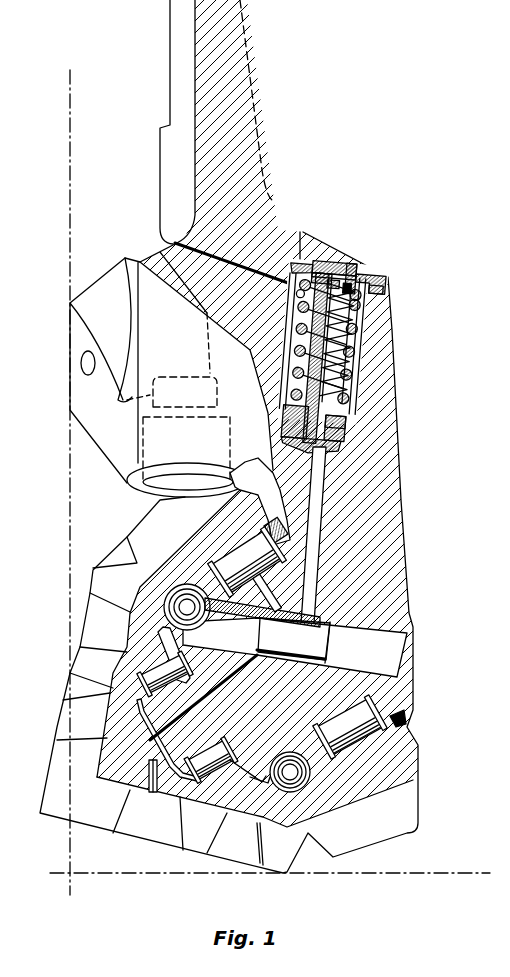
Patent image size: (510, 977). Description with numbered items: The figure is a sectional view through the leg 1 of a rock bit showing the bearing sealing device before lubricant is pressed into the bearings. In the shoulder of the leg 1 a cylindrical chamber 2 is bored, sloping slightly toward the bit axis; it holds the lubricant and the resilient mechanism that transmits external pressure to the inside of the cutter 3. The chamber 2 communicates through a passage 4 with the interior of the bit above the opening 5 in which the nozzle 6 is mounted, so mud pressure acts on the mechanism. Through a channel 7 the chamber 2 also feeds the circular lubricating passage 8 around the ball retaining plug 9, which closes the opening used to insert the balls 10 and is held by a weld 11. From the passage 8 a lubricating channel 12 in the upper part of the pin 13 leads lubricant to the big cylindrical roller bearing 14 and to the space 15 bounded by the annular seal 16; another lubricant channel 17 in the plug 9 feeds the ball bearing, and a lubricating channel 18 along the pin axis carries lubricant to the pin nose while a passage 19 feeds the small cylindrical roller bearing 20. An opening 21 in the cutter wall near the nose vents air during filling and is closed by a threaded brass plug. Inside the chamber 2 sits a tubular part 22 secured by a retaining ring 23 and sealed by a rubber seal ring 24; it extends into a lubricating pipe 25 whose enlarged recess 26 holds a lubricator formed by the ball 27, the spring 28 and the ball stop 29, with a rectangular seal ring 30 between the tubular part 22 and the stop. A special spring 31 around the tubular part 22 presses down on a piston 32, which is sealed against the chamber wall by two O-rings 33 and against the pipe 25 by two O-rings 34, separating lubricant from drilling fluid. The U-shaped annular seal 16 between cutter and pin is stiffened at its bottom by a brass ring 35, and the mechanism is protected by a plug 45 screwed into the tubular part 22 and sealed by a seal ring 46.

The leg 1 is at (233, 77).
The cylindrical chamber 2 is at (362, 395).
The cutter 3 is at (177, 565).
The passage 4 is at (177, 255).
The opening 5 is at (167, 387).
The nozzle 6 is at (163, 480).
The channel 7 is at (250, 473).
The circular lubricating passage 8 is at (310, 623).
The ball retaining plug 9 is at (200, 635).
The balls 10 is at (313, 773).
The weld 11 is at (417, 673).
The lubricating channel 12 is at (280, 590).
The pin 13 is at (157, 722).
The big cylindrical roller bearing 14 is at (380, 747).
The space 15 is at (410, 728).
The annular seal 16 is at (262, 534).
The lubricant channel 17 is at (238, 607).
The lubricating channel 18 is at (267, 677).
The passage 19 is at (113, 690).
The small cylindrical roller bearing 20 is at (220, 793).
The opening 21 is at (153, 767).
The tubular part 22 is at (317, 260).
The retaining ring 23 is at (300, 263).
The rubber seal ring 24 is at (387, 290).
The lubricating pipe 25 is at (337, 400).
The recess 26 is at (365, 315).
The ball 27 is at (310, 300).
The spring 28 is at (355, 305).
The ball stop 29 is at (373, 270).
The seal ring of rectangular cross-section 30 is at (390, 280).
The special spring 31 is at (357, 352).
The piston 32 is at (330, 450).
The O-rings 33 is at (347, 432).
The O-rings 34 is at (347, 430).
The brass ring 35 is at (268, 528).
The plug 45 is at (327, 262).
The seal ring 46 is at (353, 262).